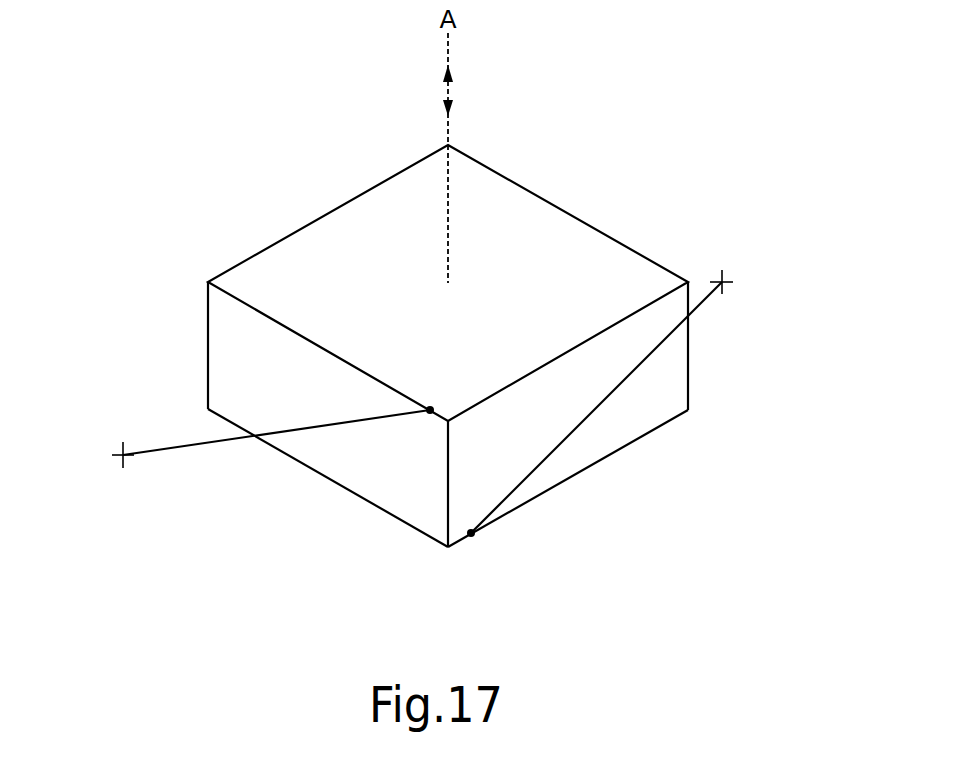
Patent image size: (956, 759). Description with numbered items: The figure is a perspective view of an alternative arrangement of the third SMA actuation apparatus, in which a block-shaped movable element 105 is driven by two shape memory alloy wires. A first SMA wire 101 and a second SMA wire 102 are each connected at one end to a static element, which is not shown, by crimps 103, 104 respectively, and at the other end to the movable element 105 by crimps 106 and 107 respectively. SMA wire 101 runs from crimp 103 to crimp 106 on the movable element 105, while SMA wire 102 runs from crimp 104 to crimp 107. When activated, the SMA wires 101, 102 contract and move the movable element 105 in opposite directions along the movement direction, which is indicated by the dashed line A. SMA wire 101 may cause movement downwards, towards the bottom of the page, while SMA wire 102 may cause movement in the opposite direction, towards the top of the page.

The SMA wire 101 is at (293, 431).
The SMA wire 102 is at (597, 403).
The crimp 103 is at (120, 453).
The crimp 104 is at (722, 282).
The movable element 105 is at (553, 203).
The crimp 106 is at (430, 414).
The crimp 107 is at (473, 537).